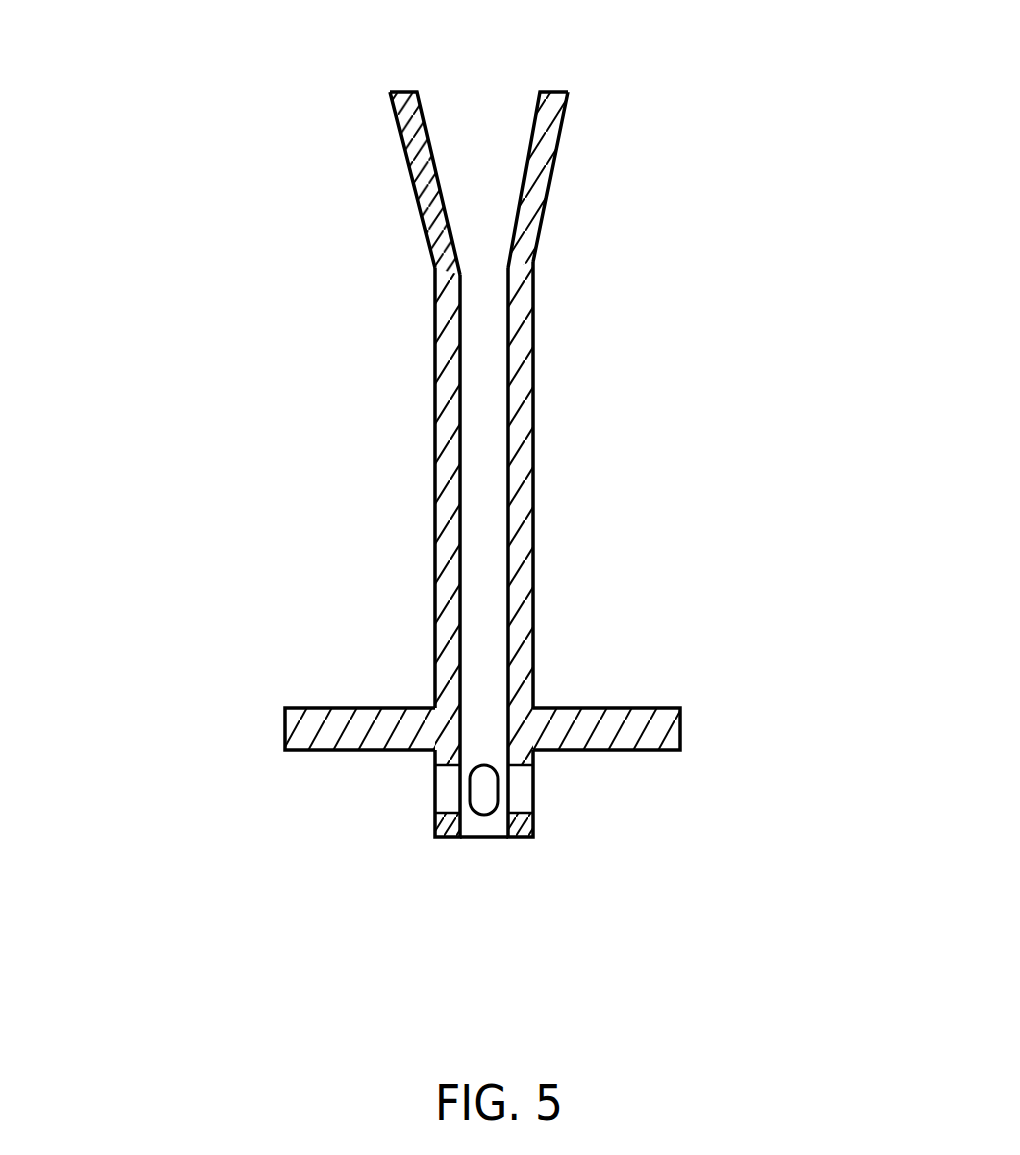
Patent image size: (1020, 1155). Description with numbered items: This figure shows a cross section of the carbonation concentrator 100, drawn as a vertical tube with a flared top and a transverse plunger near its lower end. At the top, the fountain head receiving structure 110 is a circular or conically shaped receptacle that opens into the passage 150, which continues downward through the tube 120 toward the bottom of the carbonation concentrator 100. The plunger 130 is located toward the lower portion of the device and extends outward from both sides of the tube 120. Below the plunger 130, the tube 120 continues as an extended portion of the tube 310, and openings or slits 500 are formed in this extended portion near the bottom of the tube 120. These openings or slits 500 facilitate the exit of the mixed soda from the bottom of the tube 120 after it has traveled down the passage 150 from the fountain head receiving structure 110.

The carbonation concentrator 100 is at (437, 513).
The fountain head receiving structure 110 is at (543, 220).
The tube 120 is at (533, 453).
The plunger 130 is at (573, 708).
The passage 150 is at (478, 50).
The extended portion of the tube 310 is at (543, 843).
The openings or slits 500 is at (448, 793).